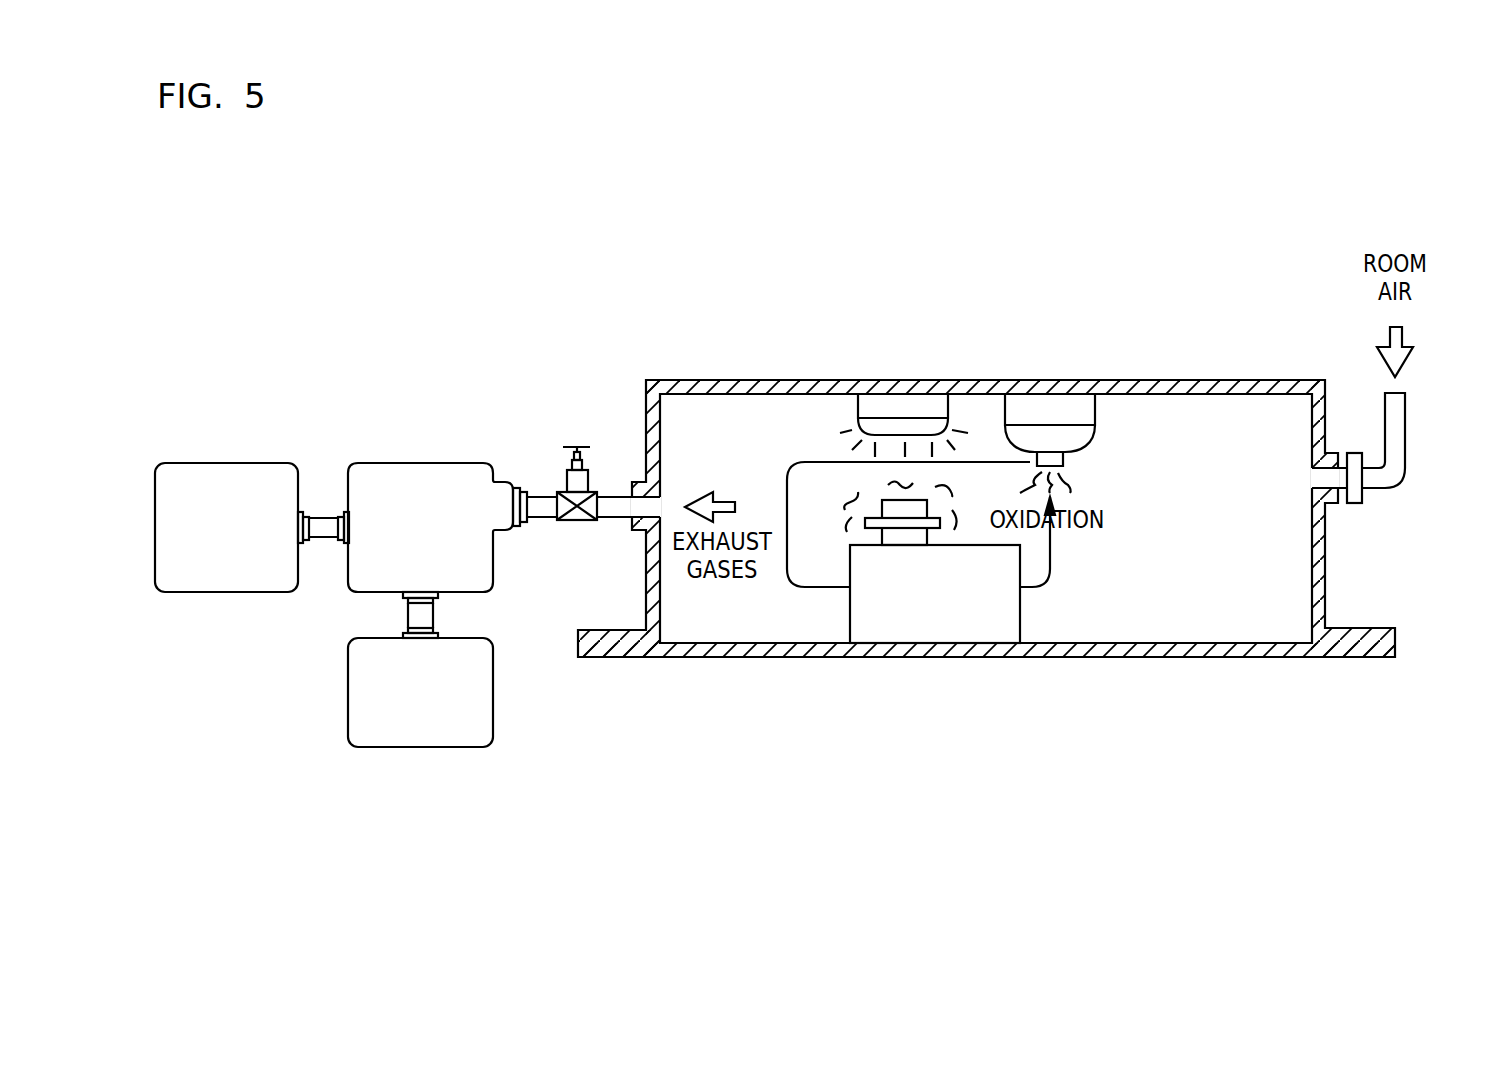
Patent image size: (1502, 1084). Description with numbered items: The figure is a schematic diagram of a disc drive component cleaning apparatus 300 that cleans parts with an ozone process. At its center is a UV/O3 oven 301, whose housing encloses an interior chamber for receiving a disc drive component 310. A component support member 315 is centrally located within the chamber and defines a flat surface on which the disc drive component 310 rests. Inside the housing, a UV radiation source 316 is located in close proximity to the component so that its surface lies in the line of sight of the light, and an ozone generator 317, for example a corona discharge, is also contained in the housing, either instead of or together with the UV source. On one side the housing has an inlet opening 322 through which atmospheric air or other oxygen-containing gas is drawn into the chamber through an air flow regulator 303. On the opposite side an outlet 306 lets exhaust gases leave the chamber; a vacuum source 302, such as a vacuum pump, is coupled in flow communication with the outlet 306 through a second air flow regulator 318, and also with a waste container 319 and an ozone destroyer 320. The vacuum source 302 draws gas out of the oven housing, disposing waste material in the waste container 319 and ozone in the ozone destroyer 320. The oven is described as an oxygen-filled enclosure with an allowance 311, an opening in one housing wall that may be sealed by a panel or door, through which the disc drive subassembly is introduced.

The disc drive component cleaning apparatus 300 is at (622, 655).
The UV/O3 oven 301 is at (737, 387).
The vacuum source 302 is at (452, 527).
The air flow regulator 303 is at (1362, 503).
The outlet 306 is at (662, 508).
The disc drive component 310 is at (900, 535).
The allowance 311 is at (1038, 568).
The component support member 315 is at (935, 594).
The UV radiation source 316 is at (907, 407).
The ozone generator 317 is at (1053, 407).
The air flow regulator 318 is at (577, 447).
The waste container 319 is at (420, 669).
The ozone destroyer 320 is at (252, 527).
The inlet opening 322 is at (1308, 482).